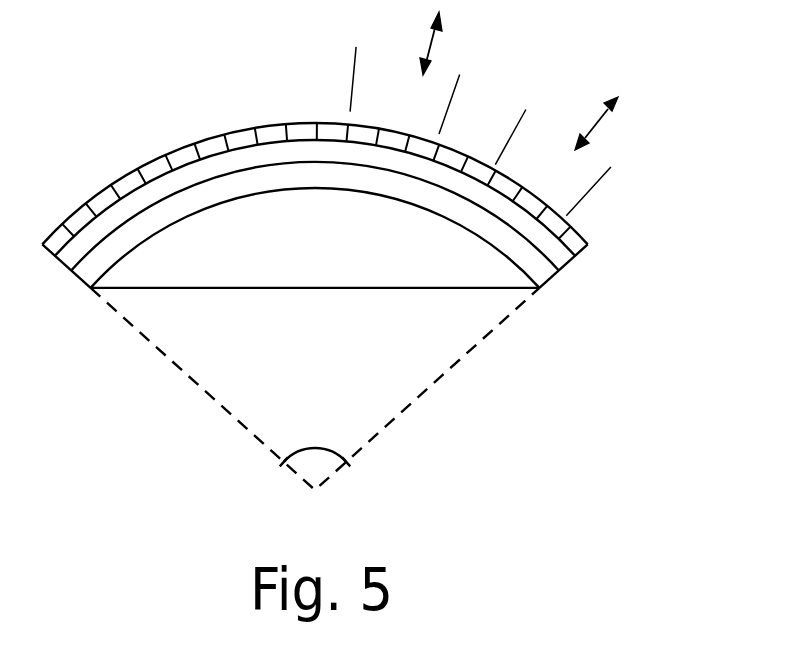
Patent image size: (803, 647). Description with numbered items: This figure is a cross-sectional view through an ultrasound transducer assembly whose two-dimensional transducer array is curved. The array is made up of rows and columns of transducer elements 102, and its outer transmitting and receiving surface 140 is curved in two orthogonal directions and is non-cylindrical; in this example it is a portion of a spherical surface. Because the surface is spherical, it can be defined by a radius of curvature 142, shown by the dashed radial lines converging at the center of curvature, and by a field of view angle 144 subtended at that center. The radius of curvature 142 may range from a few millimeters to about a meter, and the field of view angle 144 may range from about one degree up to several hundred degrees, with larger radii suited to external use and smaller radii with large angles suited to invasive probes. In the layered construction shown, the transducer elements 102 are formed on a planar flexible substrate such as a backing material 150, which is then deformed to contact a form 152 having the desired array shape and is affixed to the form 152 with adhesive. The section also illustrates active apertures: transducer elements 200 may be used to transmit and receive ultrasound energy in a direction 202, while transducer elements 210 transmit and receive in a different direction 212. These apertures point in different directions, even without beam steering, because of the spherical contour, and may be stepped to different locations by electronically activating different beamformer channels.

The transducer elements 102 is at (141, 166).
The transmitting and receiving surface 140 is at (242, 126).
The radius of curvature 142 is at (207, 394).
The field of view angle 144 is at (312, 447).
The backing material 150 is at (425, 170).
The form 152 is at (153, 216).
The transducer elements 200 is at (425, 138).
The direction 202 is at (433, 44).
The transducer elements 210 is at (558, 214).
The direction 212 is at (598, 122).